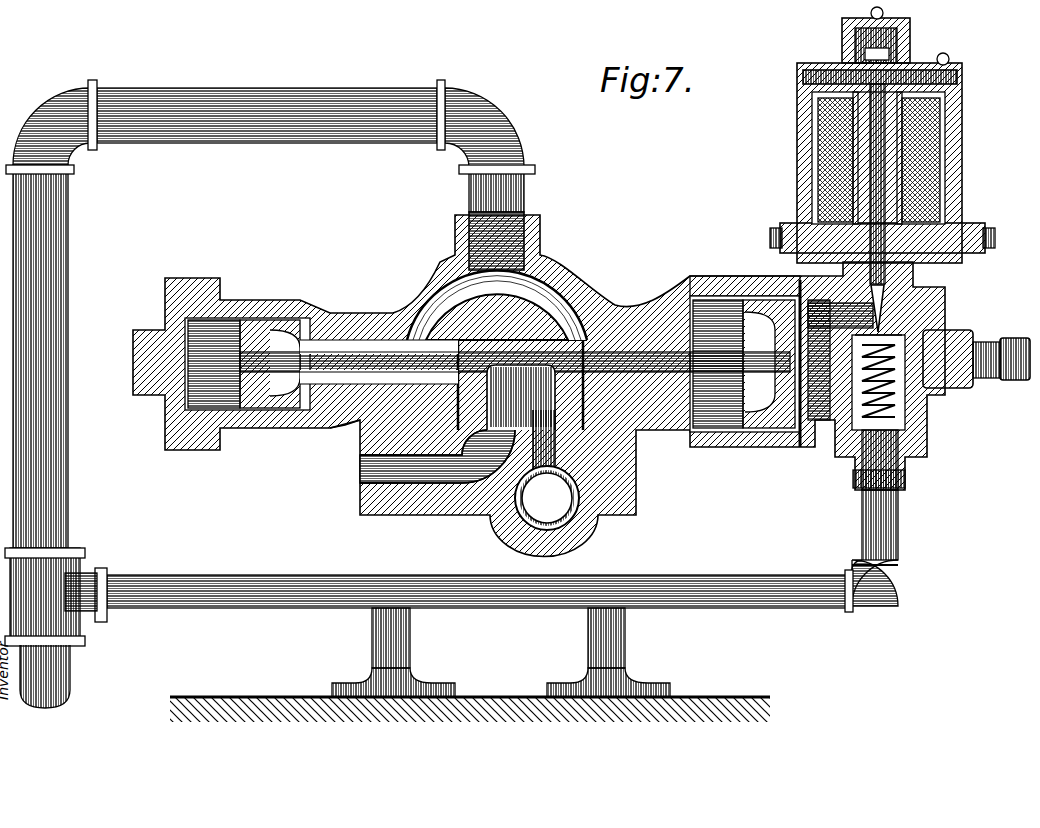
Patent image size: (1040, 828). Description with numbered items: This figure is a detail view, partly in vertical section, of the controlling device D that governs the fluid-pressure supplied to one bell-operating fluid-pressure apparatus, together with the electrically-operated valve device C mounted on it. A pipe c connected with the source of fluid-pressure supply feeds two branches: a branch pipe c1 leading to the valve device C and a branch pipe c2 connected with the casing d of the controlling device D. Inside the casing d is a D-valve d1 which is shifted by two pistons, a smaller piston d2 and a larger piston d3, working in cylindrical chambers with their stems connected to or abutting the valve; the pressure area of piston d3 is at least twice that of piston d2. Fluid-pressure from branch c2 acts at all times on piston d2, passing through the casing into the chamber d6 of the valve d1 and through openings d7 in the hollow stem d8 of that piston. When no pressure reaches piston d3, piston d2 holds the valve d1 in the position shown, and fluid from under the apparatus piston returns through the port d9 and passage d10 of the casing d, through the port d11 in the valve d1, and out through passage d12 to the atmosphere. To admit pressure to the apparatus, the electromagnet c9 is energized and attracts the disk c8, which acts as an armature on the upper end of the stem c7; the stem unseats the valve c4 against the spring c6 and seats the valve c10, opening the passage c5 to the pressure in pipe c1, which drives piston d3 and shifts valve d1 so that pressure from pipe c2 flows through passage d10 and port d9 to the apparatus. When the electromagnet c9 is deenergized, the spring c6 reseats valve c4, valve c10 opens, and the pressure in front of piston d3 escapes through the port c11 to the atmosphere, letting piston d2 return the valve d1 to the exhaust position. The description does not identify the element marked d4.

The electrically-operated valve device C is at (876, 147).
The controlling device D is at (481, 336).
The pipe c is at (70, 686).
The branch pipe c1 is at (500, 605).
The branch pipe c2 is at (255, 135).
The valve c4 is at (925, 318).
The passage c5 is at (880, 320).
The spring c6 is at (918, 395).
The stem c7 is at (940, 197).
The disk c8 is at (905, 78).
The electromagnet c9 is at (940, 135).
The valve c10 is at (895, 288).
The port c11 is at (890, 300).
The casing d is at (560, 280).
The D-valve d1 is at (586, 300).
The piston d2 is at (270, 325).
The piston d3 is at (540, 248).
The right piston d4 is at (745, 363).
The chamber d6 is at (370, 432).
The openings d7 is at (428, 335).
The hollow stem d8 is at (280, 385).
The port d9 is at (548, 498).
The passage d10 is at (498, 485).
The port d11 is at (545, 408).
The passage d12 is at (358, 472).